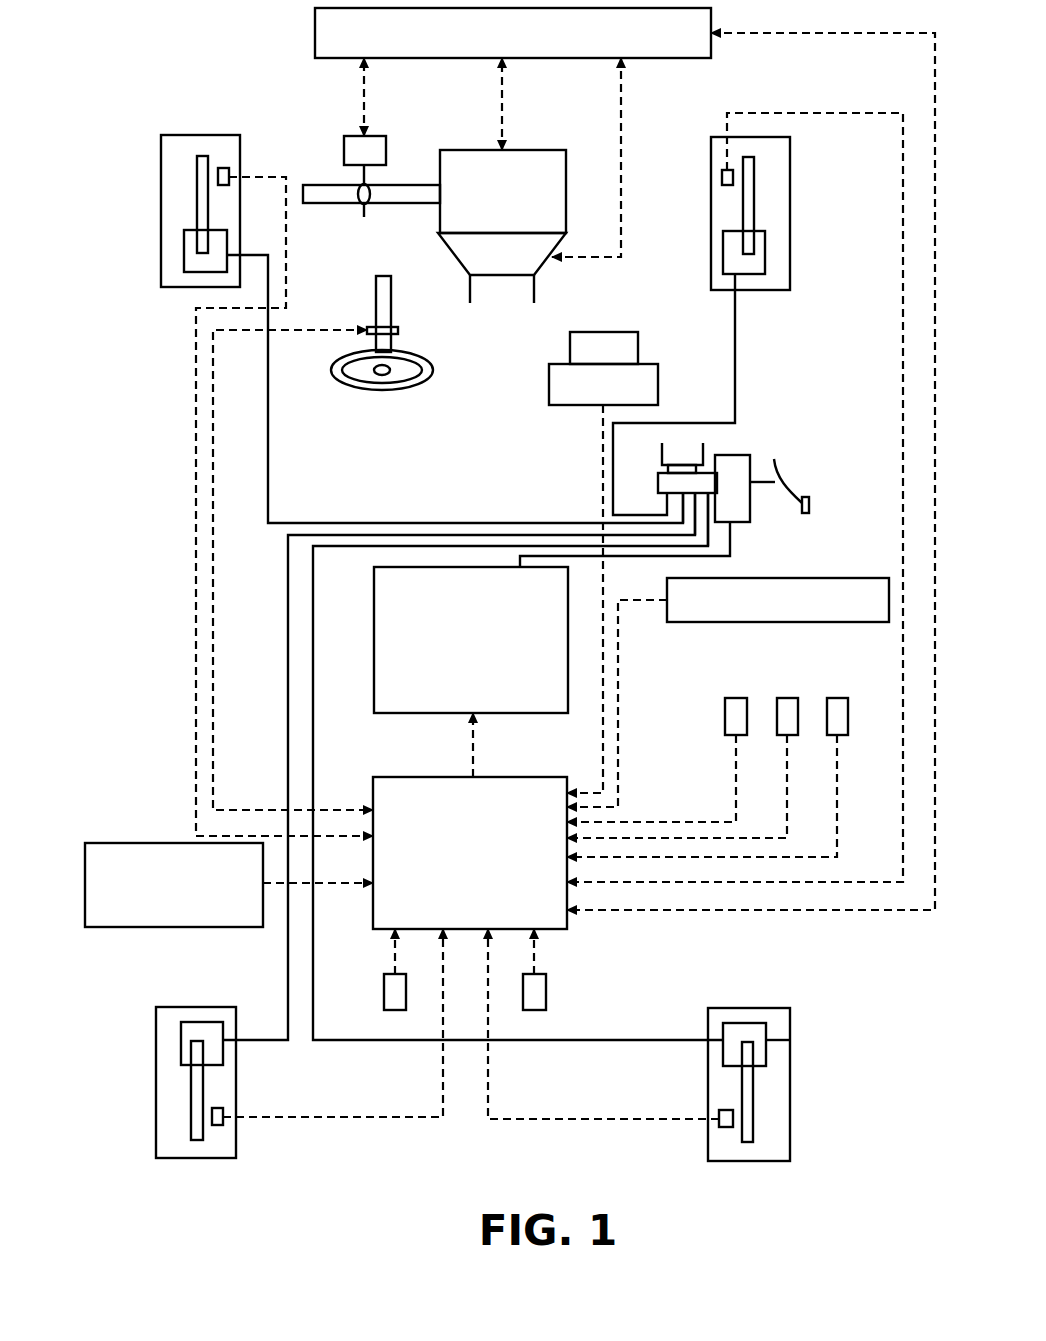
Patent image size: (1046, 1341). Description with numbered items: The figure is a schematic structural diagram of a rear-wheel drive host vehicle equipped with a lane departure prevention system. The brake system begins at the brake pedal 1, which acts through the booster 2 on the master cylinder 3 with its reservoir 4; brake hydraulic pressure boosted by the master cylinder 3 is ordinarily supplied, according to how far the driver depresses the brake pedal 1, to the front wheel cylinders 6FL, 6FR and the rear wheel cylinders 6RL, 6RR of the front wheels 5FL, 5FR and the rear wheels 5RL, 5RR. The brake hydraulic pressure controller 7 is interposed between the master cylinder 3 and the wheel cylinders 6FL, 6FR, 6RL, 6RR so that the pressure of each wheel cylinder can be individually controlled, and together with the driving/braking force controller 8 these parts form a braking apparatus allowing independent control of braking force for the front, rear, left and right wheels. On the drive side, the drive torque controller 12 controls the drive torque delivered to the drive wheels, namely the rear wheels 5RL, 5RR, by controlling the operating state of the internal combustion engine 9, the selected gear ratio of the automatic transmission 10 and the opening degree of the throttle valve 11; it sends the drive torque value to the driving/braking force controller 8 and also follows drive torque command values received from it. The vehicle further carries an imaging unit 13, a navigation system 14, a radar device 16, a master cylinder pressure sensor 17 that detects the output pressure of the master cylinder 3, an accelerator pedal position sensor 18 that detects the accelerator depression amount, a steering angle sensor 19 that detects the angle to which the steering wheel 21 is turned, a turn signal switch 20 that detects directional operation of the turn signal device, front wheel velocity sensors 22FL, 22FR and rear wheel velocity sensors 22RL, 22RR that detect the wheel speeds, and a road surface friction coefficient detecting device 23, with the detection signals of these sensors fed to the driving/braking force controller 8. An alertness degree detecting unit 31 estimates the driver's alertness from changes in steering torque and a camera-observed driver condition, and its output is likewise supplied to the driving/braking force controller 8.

The brake pedal 1 is at (809, 505).
The booster 2 is at (750, 508).
The master cylinder 3 is at (658, 483).
The reservoir 4 is at (660, 455).
The front left wheel 5FL is at (228, 204).
The front right wheel 5FR is at (753, 192).
The rear left wheel 5RL is at (213, 1052).
The rear right wheel 5RR is at (743, 1053).
The front left wheel cylinder 6FL is at (193, 273).
The front right wheel cylinder 6FR is at (765, 250).
The rear left wheel cylinder 6RL is at (181, 1043).
The rear right wheel cylinder 6RR is at (790, 1040).
The brake hydraulic pressure controller 7 is at (374, 648).
The driving/braking force controller 8 is at (373, 782).
The internal combustion engine 9 is at (535, 150).
The automatic transmission 10 is at (443, 250).
The throttle valve 11 is at (360, 212).
The drive torque controller 12 is at (315, 32).
The imaging unit 13 is at (658, 385).
The navigation system 14 is at (690, 622).
The radar device 16 is at (735, 698).
The master cylinder pressure sensor 17 is at (787, 698).
The accelerator pedal position sensor 18 is at (837, 698).
The steering angle sensor 19 is at (398, 330).
The turn signal switch 20 is at (535, 1010).
The steering wheel 21 is at (430, 377).
The front left wheel velocity sensor 22FL is at (230, 175).
The front right wheel velocity sensor 22FR is at (722, 178).
The rear left wheel velocity sensor 22RL is at (223, 1122).
The rear right wheel velocity sensor 22RR is at (719, 1125).
The road surface friction coefficient detecting device 23 is at (395, 1010).
The alertness degree detecting unit 31 is at (163, 843).